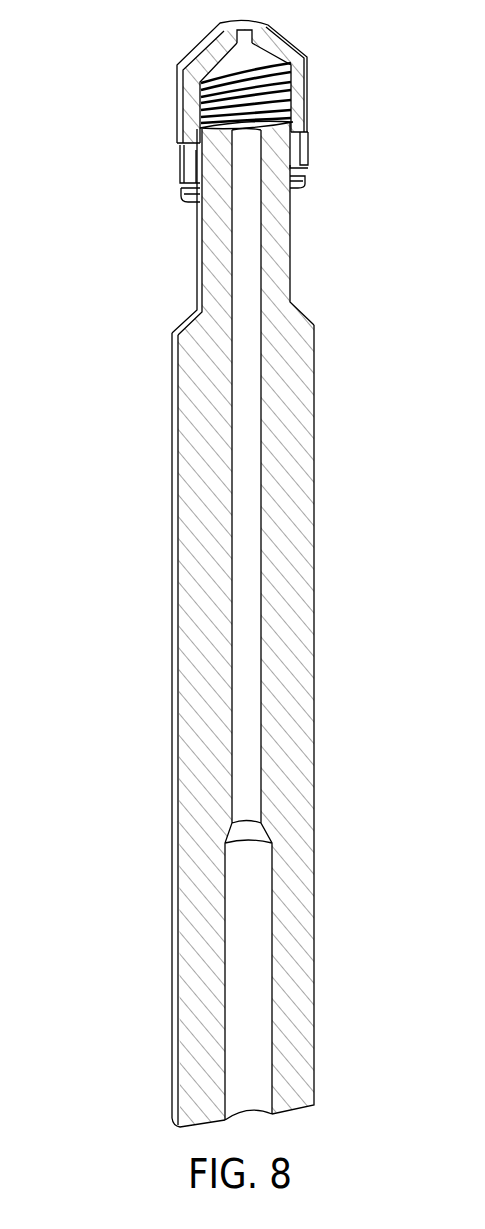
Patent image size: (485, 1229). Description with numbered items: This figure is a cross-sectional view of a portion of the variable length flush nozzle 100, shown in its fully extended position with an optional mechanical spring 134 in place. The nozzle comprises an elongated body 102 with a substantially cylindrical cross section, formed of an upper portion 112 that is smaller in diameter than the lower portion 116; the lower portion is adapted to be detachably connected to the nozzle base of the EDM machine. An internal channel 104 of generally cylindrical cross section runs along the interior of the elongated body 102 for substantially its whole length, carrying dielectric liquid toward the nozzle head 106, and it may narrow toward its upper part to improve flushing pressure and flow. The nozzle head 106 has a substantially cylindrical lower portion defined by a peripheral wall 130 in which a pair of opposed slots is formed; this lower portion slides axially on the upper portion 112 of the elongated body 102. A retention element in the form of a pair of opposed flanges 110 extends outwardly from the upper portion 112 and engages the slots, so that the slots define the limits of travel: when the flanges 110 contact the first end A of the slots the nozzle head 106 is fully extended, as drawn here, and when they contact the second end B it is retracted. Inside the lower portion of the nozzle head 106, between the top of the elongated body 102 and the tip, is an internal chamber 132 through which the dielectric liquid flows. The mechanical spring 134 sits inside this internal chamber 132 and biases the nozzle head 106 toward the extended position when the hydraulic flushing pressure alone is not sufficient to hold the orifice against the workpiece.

The variable length flush nozzle 100 is at (224, 569).
The elongated body 102 is at (290, 624).
The internal channel 104 is at (252, 592).
The nozzle head 106 is at (256, 77).
The pair of opposed flanges 110 is at (238, 208).
The upper portion 112 is at (291, 266).
The lower portion 116 is at (315, 810).
The peripheral wall 130 is at (180, 101).
The internal chamber 132 is at (237, 56).
The mechanical spring 134 is at (265, 78).
The first end A is at (190, 205).
The second end B is at (186, 152).